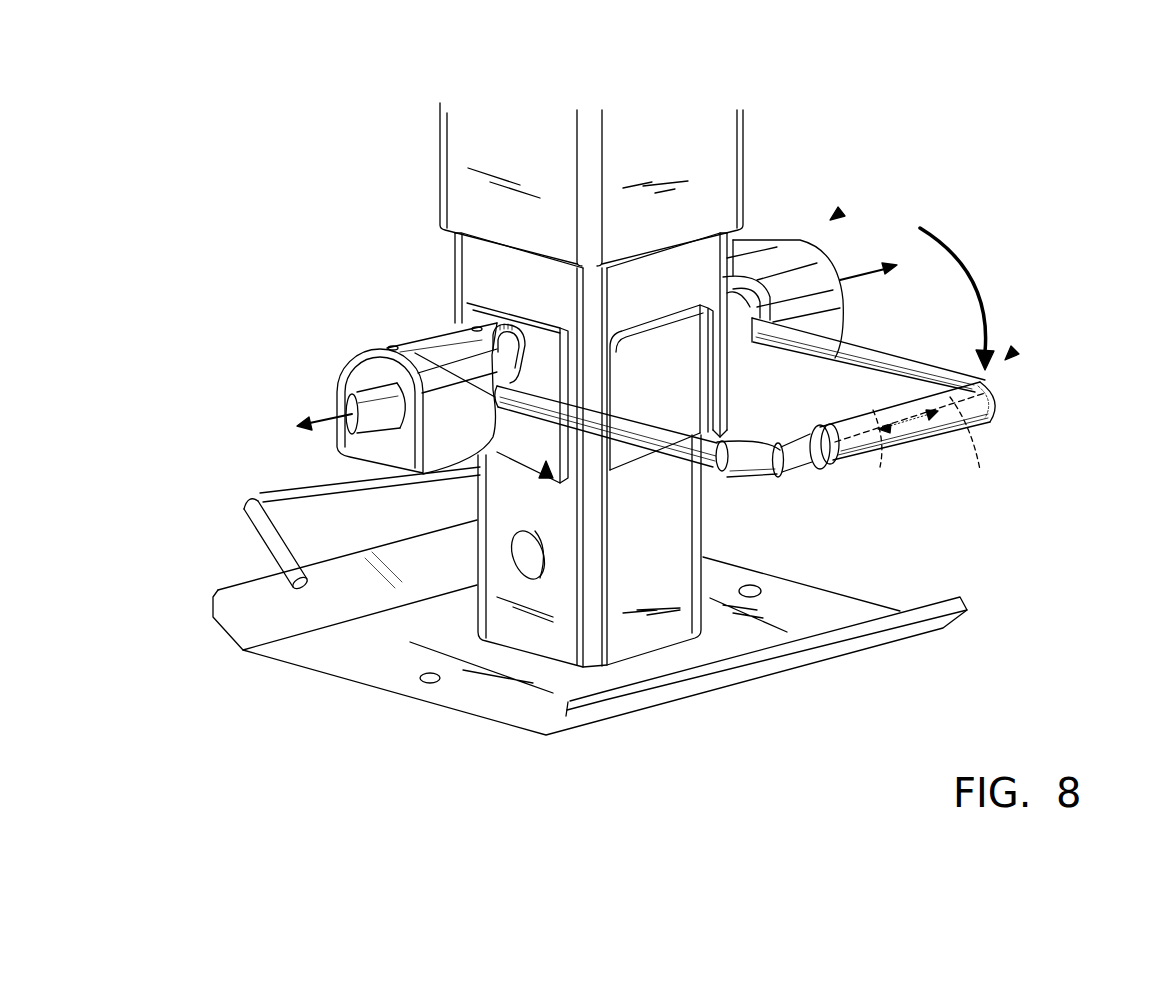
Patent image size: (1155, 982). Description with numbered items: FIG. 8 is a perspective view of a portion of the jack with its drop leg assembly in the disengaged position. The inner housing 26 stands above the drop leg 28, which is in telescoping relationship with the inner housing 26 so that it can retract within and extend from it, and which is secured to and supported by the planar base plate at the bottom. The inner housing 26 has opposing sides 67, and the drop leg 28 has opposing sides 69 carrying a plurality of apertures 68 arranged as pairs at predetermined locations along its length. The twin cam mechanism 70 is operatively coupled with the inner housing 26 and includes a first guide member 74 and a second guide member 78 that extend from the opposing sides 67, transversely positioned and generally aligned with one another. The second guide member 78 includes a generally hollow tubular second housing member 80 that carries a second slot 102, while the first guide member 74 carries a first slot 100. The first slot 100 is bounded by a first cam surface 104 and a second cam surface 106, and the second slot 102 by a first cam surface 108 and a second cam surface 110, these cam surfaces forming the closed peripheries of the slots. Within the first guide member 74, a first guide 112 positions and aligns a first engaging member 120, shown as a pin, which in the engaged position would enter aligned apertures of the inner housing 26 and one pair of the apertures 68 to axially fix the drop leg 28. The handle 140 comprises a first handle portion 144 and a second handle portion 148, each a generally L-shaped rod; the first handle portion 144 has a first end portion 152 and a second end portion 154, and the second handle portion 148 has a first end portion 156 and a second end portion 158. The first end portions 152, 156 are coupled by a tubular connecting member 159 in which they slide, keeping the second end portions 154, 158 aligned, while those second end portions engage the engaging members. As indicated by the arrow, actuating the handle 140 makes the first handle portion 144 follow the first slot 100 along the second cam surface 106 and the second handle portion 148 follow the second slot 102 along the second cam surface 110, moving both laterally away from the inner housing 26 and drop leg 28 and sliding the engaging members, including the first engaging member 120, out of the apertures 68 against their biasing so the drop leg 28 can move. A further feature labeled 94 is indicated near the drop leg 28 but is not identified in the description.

The inner housing 26 is at (722, 253).
The drop leg 28 is at (522, 625).
The sides 67 is at (480, 273).
The apertures 68 is at (517, 573).
The sides 69 is at (495, 518).
The twin cam mechanism 70 is at (1012, 353).
The first guide member 74 is at (384, 338).
The second guide member 78 is at (838, 214).
The second housing member 80 is at (740, 256).
The lift direction 94 is at (547, 480).
The first slot 100 is at (492, 328).
The second slot 102 is at (757, 260).
The first cam surface 104 is at (503, 333).
The second cam surface 106 is at (525, 365).
The first cam surface 108 is at (750, 273).
The second cam surface 110 is at (737, 325).
The first guide 112 is at (367, 383).
The first engaging member 120 is at (340, 403).
The handle 140 is at (915, 375).
The first handle portion 144 is at (620, 422).
The second handle portion 148 is at (853, 357).
The first end portion 152 is at (910, 441).
The second end portion 154 is at (390, 349).
The first end portion 156 is at (947, 460).
The second end portion 158 is at (770, 394).
The connecting member 159 is at (965, 413).